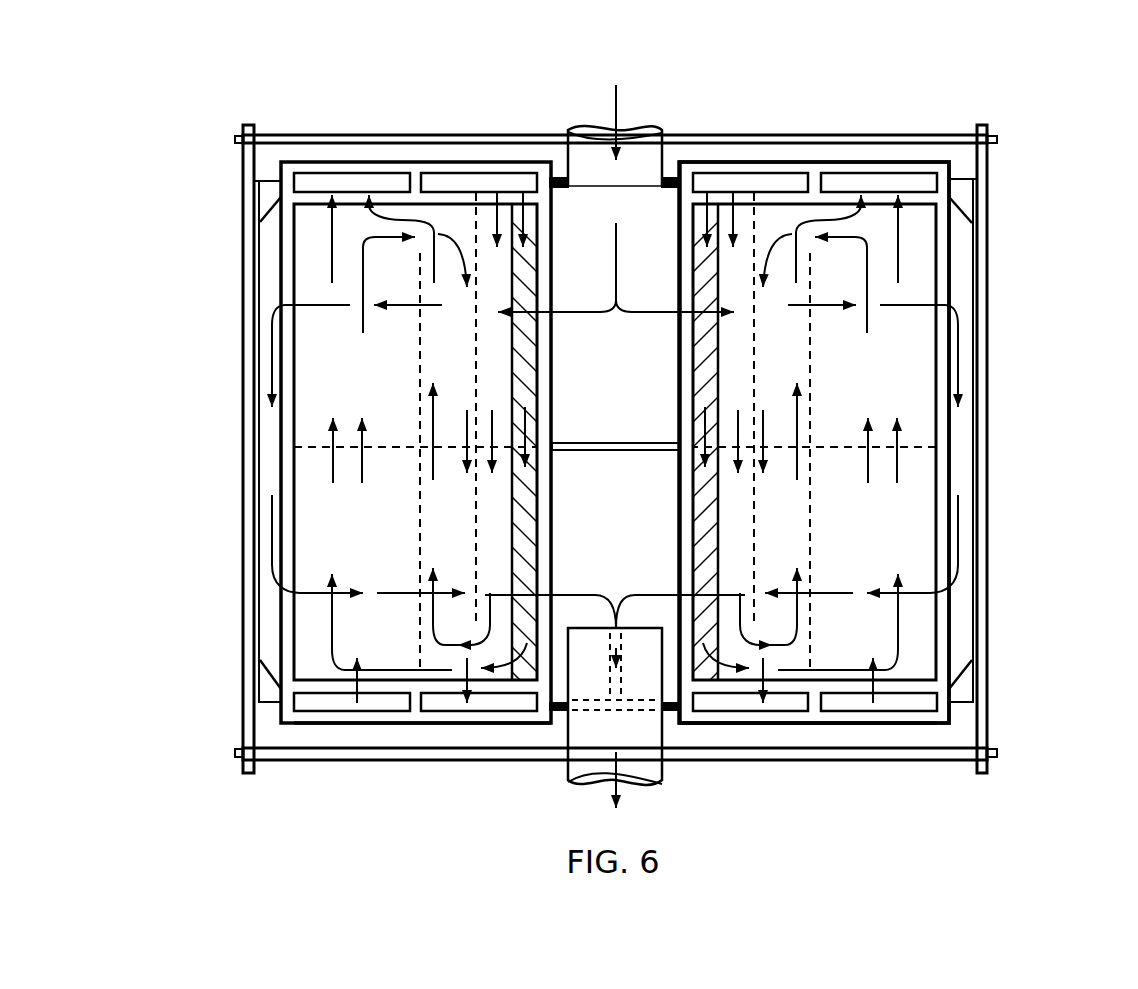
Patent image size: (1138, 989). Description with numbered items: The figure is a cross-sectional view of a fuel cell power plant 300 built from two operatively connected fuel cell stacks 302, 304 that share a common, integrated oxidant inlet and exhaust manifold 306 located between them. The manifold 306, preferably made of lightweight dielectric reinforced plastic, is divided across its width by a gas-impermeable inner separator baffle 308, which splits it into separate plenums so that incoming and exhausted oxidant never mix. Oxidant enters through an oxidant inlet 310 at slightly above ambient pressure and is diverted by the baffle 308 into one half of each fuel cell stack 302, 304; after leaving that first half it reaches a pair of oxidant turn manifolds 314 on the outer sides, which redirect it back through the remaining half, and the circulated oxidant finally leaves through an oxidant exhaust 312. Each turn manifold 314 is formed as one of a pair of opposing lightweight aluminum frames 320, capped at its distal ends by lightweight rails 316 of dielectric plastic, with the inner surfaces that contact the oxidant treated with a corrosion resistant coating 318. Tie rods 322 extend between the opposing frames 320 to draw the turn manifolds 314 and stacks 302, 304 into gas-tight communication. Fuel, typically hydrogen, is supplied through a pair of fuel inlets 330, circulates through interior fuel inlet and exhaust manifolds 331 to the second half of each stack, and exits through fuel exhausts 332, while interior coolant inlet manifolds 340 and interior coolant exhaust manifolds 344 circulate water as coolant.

The fuel cell power plant 300 is at (291, 86).
The fuel cell stack 302 is at (323, 532).
The fuel cell stack 304 is at (922, 528).
The integrated oxidant inlet and exhaust manifold 306 is at (672, 175).
The inner separator baffle 308 is at (624, 440).
The oxidant inlet 310 is at (637, 118).
The oxidant exhaust 312 is at (662, 753).
The oxidant turn manifold 314 is at (258, 176).
The lightweight rail 316 is at (263, 205).
The corrosion resistant coating 318 is at (263, 418).
The lightweight aluminum frame 320 is at (257, 325).
The tie rod 322 is at (243, 137).
The fuel inlet 330 is at (337, 707).
The interior fuel inlet and exhaust manifold 331 is at (413, 728).
The fuel exhaust 332 is at (497, 707).
The interior coolant inlet manifold 340 is at (485, 175).
The interior coolant exhaust manifold 344 is at (365, 175).